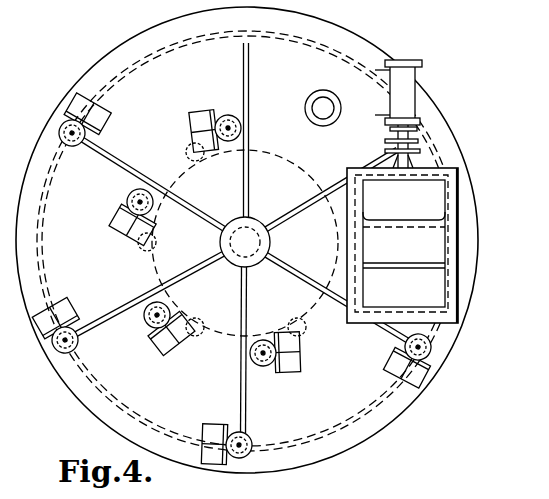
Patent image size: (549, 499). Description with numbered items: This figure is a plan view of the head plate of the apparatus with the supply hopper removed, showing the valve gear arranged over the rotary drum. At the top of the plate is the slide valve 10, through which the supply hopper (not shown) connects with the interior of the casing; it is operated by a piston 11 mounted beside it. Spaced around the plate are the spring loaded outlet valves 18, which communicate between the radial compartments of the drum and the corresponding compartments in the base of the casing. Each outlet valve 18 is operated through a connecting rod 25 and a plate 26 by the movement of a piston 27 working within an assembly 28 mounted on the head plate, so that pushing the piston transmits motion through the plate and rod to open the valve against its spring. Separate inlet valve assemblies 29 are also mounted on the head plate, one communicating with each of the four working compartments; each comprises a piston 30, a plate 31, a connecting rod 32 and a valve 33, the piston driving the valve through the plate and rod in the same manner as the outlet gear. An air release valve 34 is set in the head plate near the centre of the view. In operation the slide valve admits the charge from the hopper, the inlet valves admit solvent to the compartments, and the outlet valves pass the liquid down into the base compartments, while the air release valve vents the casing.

The slide valve 10 is at (432, 257).
The piston 11 is at (418, 90).
The spring loaded outlet valve 18 is at (77, 146).
The connecting rod 25 is at (62, 143).
The plate 26 is at (85, 137).
The piston 27 is at (67, 120).
The assembly 28 is at (72, 122).
The inlet valve assembly 29 is at (212, 112).
The piston 30 is at (225, 114).
The plate 31 is at (249, 104).
The connecting rod 32 is at (231, 149).
The inlet valve 33 is at (241, 127).
The air release valve 34 is at (309, 120).